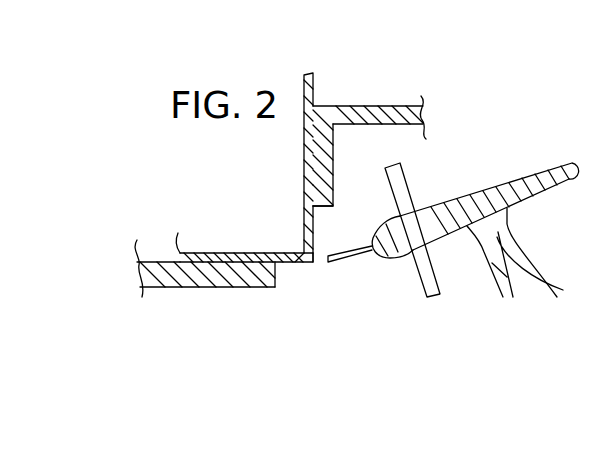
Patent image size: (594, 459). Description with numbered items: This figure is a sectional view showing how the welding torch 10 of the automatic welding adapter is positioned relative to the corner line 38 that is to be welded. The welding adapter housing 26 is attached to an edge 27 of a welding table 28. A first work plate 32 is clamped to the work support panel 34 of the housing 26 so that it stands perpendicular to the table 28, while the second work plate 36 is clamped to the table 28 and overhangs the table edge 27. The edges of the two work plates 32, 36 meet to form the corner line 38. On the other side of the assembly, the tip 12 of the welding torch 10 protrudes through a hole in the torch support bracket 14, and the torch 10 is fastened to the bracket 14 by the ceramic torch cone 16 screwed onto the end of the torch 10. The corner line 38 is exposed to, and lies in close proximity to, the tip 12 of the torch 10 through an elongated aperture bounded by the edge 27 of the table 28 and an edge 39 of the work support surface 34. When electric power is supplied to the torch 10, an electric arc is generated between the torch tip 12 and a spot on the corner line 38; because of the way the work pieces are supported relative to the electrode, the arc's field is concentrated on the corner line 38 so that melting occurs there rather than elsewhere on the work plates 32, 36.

The welding torch 10 is at (538, 177).
The tip 12 is at (330, 263).
The torch support bracket 14 is at (430, 296).
The ceramic torch cone 16 is at (382, 231).
The housing 26 is at (368, 112).
The edge 27 is at (274, 287).
The welding table 28 is at (180, 287).
The first work plate 32 is at (332, 52).
The work support panel 34 is at (323, 147).
The second work plate 36 is at (243, 253).
The corner line 38 is at (312, 264).
The edge of the work support surface 39 is at (322, 207).